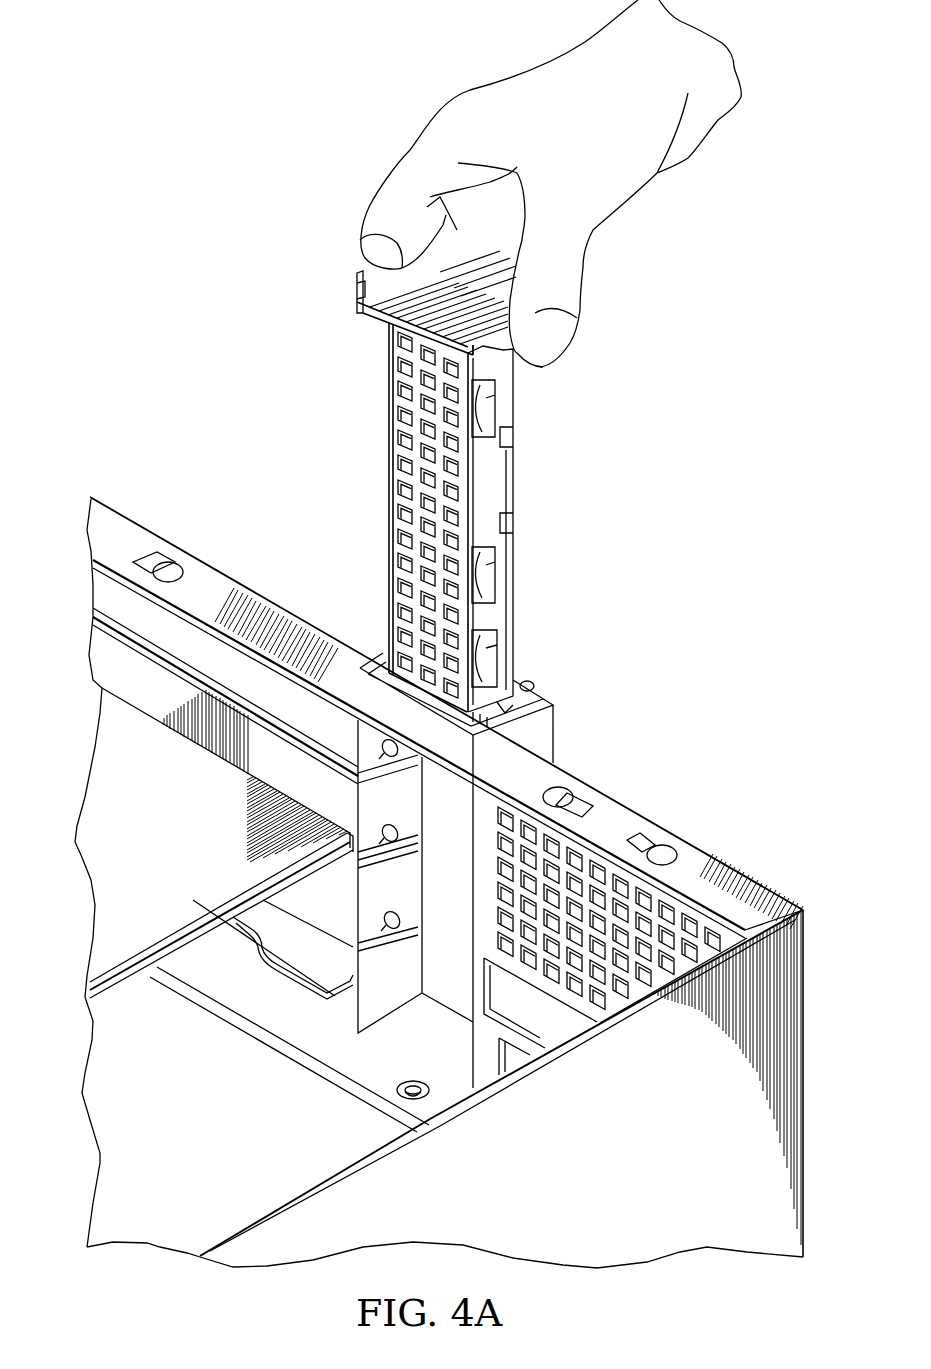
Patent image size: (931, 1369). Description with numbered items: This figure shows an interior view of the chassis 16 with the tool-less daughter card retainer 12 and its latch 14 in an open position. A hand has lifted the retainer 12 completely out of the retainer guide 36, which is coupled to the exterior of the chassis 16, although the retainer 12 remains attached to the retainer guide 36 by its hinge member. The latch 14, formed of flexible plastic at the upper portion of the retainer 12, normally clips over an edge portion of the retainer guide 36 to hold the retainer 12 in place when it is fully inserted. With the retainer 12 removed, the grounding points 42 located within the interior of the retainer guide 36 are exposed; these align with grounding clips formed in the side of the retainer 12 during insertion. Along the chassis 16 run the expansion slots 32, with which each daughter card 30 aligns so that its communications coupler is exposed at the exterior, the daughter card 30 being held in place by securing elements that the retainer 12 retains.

The tool-less daughter card retainer 12 is at (418, 447).
The latch 14 is at (402, 267).
The chassis 16 is at (617, 813).
The daughter card 30 is at (150, 935).
The expansion slot 32 is at (193, 654).
The retainer guide 36 is at (384, 996).
The grounding points 42 is at (399, 897).